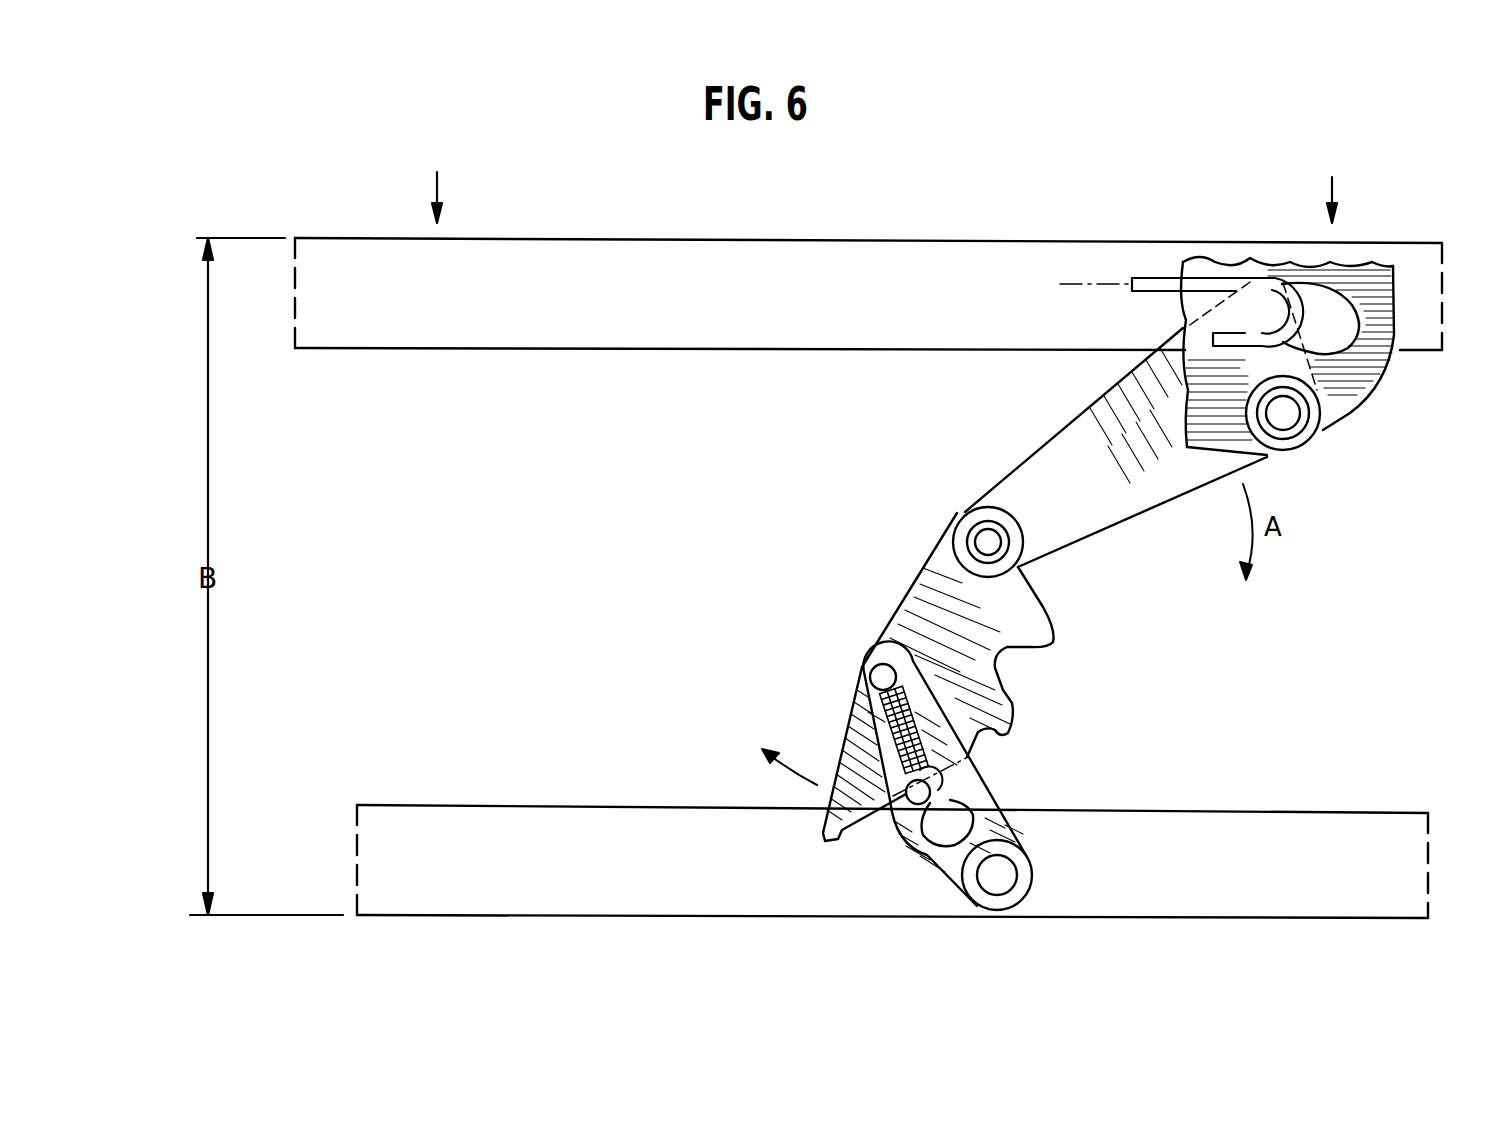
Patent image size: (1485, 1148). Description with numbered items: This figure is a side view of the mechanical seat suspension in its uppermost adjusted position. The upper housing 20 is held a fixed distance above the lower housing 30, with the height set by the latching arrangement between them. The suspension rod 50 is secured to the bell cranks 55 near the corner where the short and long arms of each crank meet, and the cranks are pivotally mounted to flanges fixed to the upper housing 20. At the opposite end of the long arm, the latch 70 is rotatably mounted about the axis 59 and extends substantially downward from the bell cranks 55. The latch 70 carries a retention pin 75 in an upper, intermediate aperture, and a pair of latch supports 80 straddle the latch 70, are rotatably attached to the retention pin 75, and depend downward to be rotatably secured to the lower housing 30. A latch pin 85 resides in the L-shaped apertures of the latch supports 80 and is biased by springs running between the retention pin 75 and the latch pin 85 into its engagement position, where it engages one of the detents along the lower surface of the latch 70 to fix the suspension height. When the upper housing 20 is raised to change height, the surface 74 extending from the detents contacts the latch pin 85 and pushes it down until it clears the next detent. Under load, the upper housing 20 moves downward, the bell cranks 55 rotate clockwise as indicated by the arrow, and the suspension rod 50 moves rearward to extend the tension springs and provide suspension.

The upper housing 20 is at (829, 238).
The lower housing 30 is at (512, 883).
The suspension rod 50 is at (1255, 303).
The bell cranks 55 is at (1062, 452).
The axis 59 is at (990, 542).
The latch 70 is at (903, 628).
The surface 74 is at (1013, 707).
The retention pin 75 is at (883, 677).
The latch supports 80 is at (1013, 828).
The latch pin 85 is at (915, 795).